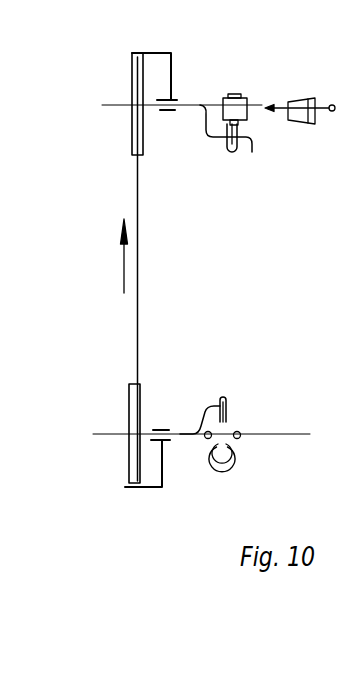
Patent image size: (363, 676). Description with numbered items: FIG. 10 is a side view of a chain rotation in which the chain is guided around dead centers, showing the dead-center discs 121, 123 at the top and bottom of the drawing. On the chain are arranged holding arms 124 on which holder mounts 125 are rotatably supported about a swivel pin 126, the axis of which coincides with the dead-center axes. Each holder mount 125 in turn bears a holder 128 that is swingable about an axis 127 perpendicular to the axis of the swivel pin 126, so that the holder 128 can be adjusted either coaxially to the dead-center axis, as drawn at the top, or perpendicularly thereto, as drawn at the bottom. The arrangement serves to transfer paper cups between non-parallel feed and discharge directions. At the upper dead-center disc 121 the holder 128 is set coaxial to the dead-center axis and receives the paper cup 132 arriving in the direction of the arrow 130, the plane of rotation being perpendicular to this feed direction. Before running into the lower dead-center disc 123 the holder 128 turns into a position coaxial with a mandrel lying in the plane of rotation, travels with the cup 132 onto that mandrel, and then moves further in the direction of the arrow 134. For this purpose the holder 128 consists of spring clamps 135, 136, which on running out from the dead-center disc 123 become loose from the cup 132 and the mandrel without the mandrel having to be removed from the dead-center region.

The dead-center disc 121 is at (131, 80).
The dead-center disc 123 is at (128, 450).
The holding arm 124 is at (172, 56).
The holder mount 125 is at (203, 131).
The swivel pin 126 is at (207, 105).
The axis 127 is at (252, 152).
The holder 128 is at (240, 97).
The arrow indicating direction of feed 130 is at (305, 124).
The paper cup 132 is at (300, 100).
The arrow indicating direction of further movement 134 is at (123, 258).
The spring clamp 135 is at (208, 440).
The spring clamp 136 is at (238, 440).